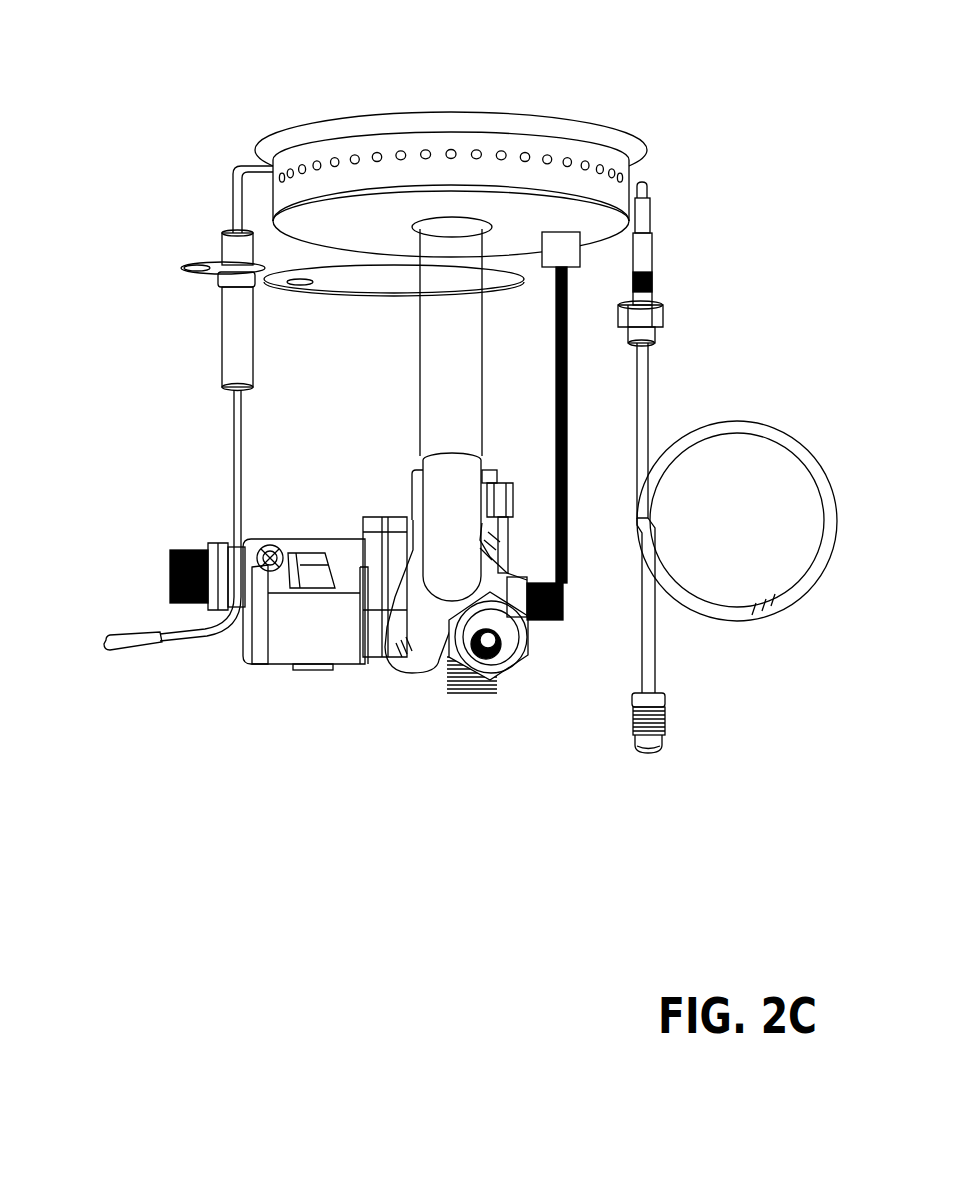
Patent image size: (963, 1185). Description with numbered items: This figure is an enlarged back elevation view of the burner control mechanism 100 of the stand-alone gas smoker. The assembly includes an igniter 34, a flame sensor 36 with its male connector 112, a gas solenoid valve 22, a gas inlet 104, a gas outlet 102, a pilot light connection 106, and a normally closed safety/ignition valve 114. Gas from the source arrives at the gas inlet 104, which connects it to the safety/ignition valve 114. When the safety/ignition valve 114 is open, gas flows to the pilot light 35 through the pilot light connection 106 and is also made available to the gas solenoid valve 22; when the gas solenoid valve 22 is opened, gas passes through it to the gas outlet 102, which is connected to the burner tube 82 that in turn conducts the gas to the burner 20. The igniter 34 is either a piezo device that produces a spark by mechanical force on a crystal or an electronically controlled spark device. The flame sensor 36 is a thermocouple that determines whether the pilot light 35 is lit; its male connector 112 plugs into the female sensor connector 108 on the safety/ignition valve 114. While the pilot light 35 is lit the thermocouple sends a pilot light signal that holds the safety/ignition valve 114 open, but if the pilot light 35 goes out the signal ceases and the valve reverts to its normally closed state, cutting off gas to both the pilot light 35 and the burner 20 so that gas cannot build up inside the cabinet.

The burner 20 is at (377, 130).
The gas solenoid valve 22 is at (313, 637).
The igniter 34 is at (238, 248).
The pilot light 35 is at (563, 243).
The flame sensor 36 is at (643, 250).
The burner tube 82 is at (417, 667).
The burner control mechanism 100 is at (325, 835).
The gas outlet 102 is at (173, 548).
The gas inlet 104 is at (470, 693).
The pilot light connection 106 is at (550, 614).
The female sensor connector 108 is at (490, 653).
The male connector 112 is at (657, 752).
The normally closed safety/ignition valve 114 is at (520, 670).